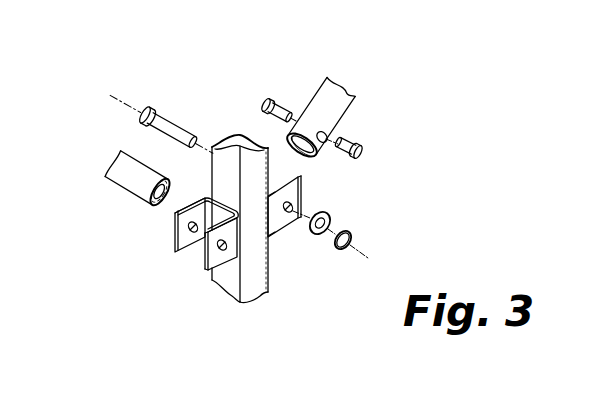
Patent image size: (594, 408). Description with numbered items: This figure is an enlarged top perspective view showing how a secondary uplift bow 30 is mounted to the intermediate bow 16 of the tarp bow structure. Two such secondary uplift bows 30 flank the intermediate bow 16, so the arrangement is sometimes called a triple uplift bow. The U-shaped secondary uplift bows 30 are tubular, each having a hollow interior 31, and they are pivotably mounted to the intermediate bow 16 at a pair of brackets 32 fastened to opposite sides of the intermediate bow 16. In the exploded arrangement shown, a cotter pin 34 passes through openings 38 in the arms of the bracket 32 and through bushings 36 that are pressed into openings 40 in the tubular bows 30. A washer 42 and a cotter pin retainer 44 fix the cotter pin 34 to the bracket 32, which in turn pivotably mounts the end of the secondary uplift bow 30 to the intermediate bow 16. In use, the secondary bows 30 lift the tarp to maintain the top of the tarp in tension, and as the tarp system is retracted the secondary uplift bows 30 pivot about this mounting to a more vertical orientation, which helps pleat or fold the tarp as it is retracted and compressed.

The intermediate bow 16 is at (262, 283).
The secondary uplift bow 30 is at (126, 186).
The hollow interior 31 is at (300, 157).
The bracket 32 is at (175, 236).
The cotter pin 34 is at (166, 110).
The bushing 36 is at (268, 100).
The opening 38 is at (196, 232).
The opening 40 is at (330, 136).
The washer 42 is at (332, 220).
The cotter pin retainer 44 is at (345, 252).